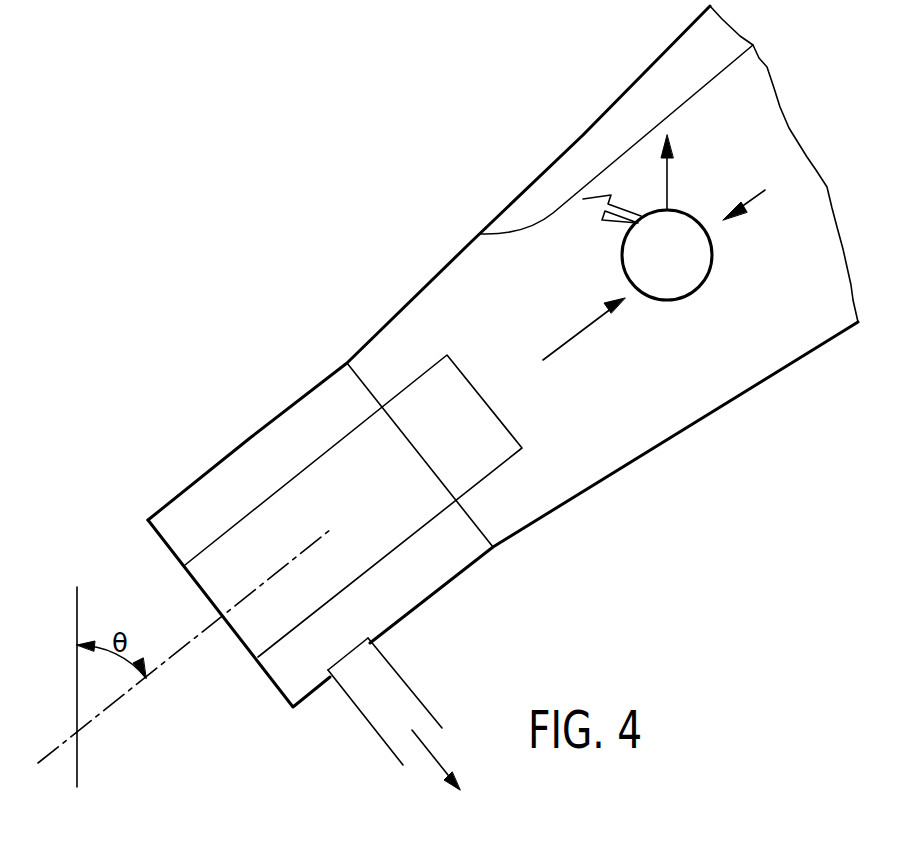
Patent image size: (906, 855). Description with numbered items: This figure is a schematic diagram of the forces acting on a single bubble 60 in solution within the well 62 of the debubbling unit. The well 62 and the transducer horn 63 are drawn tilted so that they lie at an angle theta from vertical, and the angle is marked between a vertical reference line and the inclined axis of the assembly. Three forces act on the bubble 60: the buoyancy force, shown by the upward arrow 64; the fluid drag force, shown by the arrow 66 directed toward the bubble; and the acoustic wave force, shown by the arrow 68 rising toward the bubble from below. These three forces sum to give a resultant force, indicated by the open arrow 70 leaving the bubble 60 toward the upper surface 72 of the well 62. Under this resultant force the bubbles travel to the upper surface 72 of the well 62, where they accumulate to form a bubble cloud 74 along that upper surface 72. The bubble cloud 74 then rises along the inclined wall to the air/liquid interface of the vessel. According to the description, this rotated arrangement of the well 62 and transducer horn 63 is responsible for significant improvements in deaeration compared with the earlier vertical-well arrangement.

The bubble 60 is at (652, 270).
The well 62 is at (503, 356).
The transducer horn 63 is at (364, 483).
The buoyancy force arrow 64 is at (670, 172).
The fluid drag force arrow 66 is at (756, 204).
The acoustic wave force arrow 68 is at (572, 342).
The resultant force arrow 70 is at (617, 224).
The upper surface 72 is at (582, 133).
The bubble cloud 74 is at (662, 80).